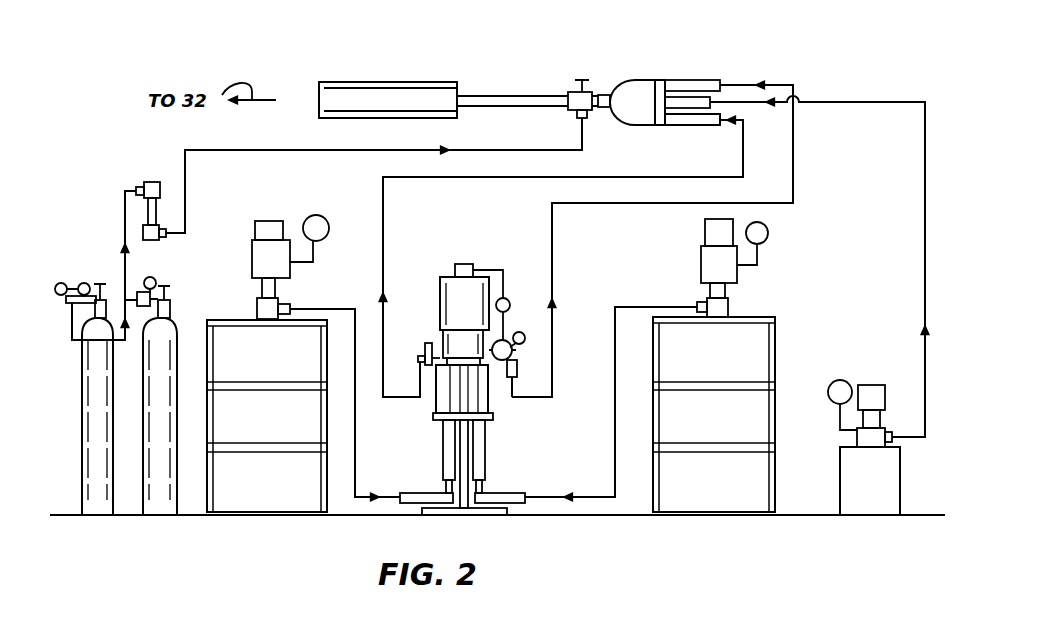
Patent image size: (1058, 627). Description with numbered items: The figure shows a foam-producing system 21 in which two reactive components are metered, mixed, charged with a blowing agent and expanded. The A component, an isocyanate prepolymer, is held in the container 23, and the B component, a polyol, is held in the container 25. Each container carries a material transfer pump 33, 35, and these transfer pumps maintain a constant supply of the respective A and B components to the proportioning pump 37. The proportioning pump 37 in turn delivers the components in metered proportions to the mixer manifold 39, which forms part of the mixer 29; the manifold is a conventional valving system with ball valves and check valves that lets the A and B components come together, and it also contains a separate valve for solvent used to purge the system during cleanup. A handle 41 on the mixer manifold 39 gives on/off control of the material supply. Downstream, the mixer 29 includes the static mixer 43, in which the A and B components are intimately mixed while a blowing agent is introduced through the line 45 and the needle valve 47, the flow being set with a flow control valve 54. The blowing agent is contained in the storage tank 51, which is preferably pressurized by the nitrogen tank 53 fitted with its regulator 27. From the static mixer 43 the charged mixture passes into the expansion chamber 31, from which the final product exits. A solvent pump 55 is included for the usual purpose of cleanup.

The dispensing system 21 is at (348, 50).
The container 23 is at (267, 416).
The container 25 is at (714, 414).
The gas regulator 27 is at (168, 270).
The mixer 29 is at (602, 72).
The expansion chamber 31 is at (420, 86).
The material transfer pump 33 is at (308, 276).
The material transfer pump 35 is at (768, 276).
The proportioning pump 37 is at (440, 262).
The mixer manifold 39 is at (652, 84).
The handle 41 is at (660, 128).
The static mixer 43 is at (520, 95).
The line 45 is at (334, 154).
The needle valve 47 is at (576, 92).
The storage tank 51 is at (172, 318).
The nitrogen tank 53 is at (84, 375).
The flow control valve 54 is at (152, 182).
The solvent pump 55 is at (864, 447).